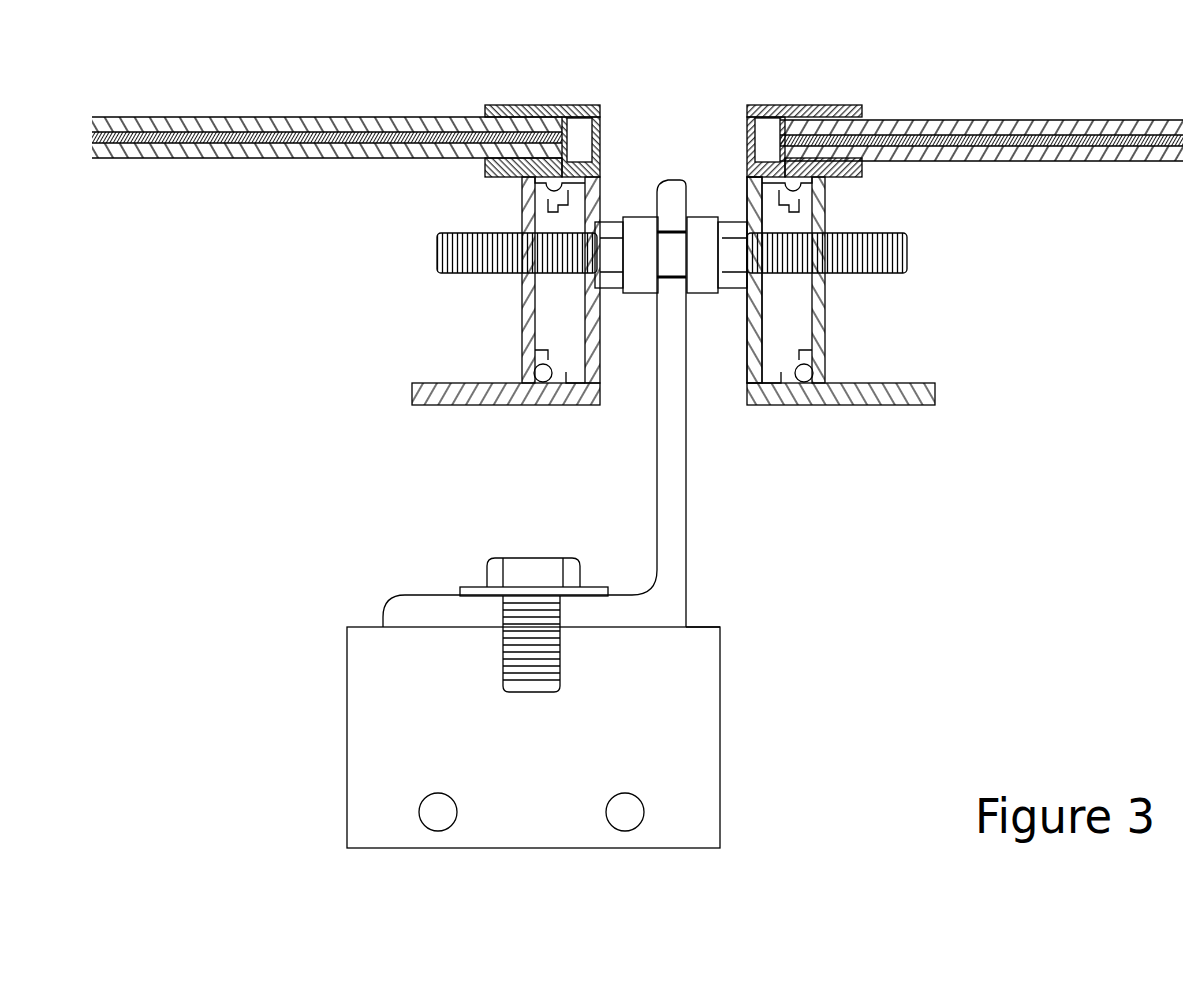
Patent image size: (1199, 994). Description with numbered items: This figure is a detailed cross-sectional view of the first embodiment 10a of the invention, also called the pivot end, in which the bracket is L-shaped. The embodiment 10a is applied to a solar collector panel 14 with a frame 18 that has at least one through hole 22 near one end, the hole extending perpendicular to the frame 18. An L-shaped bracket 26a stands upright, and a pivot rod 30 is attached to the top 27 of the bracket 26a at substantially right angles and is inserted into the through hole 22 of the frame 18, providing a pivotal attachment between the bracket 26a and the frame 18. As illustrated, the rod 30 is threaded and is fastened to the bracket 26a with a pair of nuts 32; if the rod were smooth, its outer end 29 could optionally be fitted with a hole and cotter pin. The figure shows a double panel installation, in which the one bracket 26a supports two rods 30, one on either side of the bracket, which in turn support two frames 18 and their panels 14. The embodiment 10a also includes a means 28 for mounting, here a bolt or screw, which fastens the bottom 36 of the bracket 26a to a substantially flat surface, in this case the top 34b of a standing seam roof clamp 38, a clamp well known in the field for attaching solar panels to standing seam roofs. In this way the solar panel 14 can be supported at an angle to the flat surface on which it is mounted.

The first embodiment 10a is at (545, 477).
The solar collector panel 14 is at (328, 117).
The frame 18 is at (775, 108).
The through hole 22 is at (763, 281).
The L-shaped bracket 26a is at (670, 506).
The top of the bracket 27 is at (675, 200).
The means for mounting 28 is at (530, 660).
The outer end of the rod 29 is at (908, 252).
The pivot rod 30 is at (493, 272).
The nuts 32 is at (612, 243).
The top of a standing seam roof clamp 34b is at (368, 623).
The bottom of the bracket 36 is at (640, 628).
The standing seam roof clamp 38 is at (363, 718).